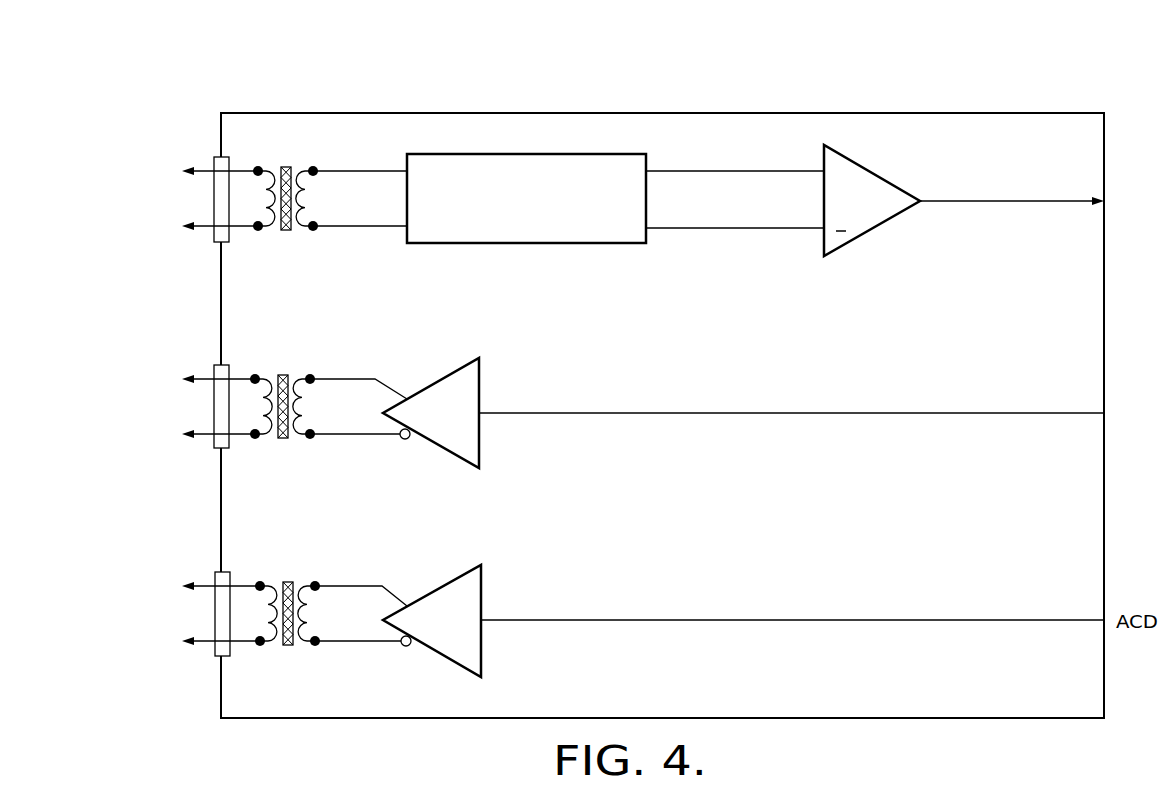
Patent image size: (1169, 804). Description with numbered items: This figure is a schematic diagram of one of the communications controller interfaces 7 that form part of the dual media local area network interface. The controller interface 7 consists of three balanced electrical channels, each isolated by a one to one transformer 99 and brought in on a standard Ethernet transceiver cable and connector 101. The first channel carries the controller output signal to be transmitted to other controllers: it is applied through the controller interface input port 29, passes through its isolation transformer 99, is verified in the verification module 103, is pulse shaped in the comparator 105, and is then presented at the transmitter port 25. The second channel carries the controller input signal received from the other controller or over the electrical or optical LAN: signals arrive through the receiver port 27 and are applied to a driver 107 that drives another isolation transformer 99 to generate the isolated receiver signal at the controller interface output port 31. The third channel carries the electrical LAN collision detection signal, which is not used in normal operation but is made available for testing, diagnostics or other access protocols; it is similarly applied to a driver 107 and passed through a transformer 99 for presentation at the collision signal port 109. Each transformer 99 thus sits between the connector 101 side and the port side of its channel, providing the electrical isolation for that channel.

The communications controller interface 7 is at (313, 113).
The transmitter port 25 is at (1104, 201).
The receiver port 27 is at (1104, 413).
The controller interface input port 29 is at (213, 157).
The controller interface output port 31 is at (214, 365).
The one to one transformer 99 is at (290, 158).
The transceiver cable and connector 101 is at (207, 228).
The verification module 103 is at (437, 165).
The comparator 105 is at (868, 170).
The driver 107 is at (480, 392).
The collision signal port 109 is at (215, 572).